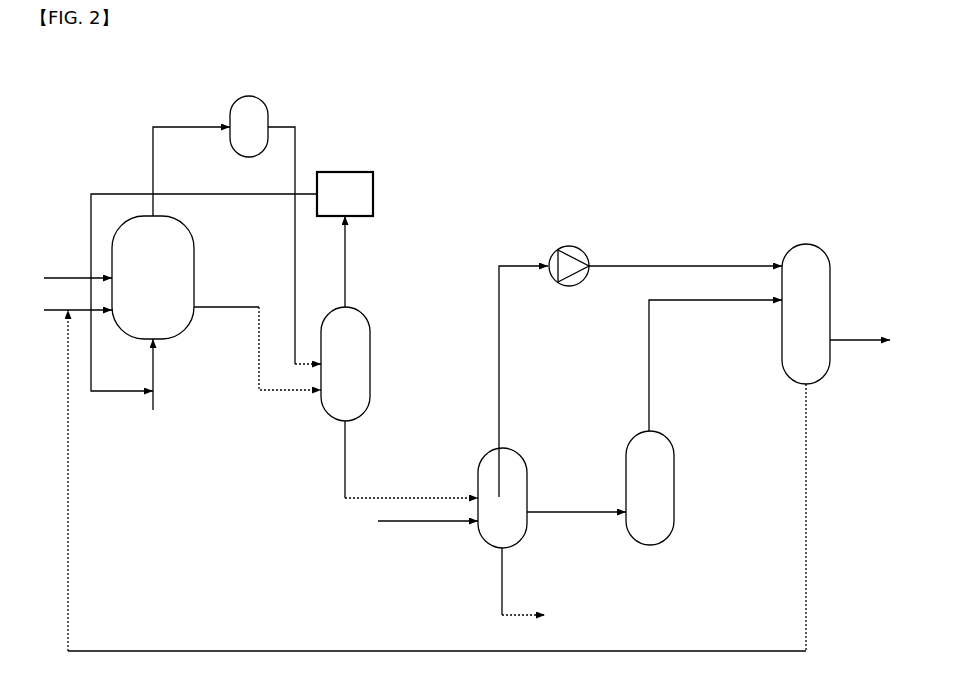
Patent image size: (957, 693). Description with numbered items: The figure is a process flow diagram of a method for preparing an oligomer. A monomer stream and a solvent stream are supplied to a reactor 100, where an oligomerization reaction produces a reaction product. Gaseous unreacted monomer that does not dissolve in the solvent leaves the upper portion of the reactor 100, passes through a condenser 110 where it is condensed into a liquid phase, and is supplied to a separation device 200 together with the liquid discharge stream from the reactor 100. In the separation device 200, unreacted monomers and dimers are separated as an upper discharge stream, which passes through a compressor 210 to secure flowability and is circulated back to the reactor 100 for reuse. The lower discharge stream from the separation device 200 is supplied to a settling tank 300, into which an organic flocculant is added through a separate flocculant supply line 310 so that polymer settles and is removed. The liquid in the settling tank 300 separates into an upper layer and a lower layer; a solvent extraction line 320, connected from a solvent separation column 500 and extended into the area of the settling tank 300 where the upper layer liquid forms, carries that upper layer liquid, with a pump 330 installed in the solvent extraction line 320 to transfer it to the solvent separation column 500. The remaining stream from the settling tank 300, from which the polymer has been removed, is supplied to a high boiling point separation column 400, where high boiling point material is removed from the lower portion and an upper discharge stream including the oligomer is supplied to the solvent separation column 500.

The reactor 100 is at (153, 277).
The condenser 110 is at (268, 110).
The separation device 200 is at (345, 364).
The compressor 210 is at (373, 185).
The settling tank 300 is at (502, 498).
The flocculant supply line 310 is at (423, 522).
The solvent extraction line 320 is at (498, 352).
The pump 330 is at (580, 248).
The high boiling point separation column 400 is at (650, 488).
The solvent separation column 500 is at (806, 314).